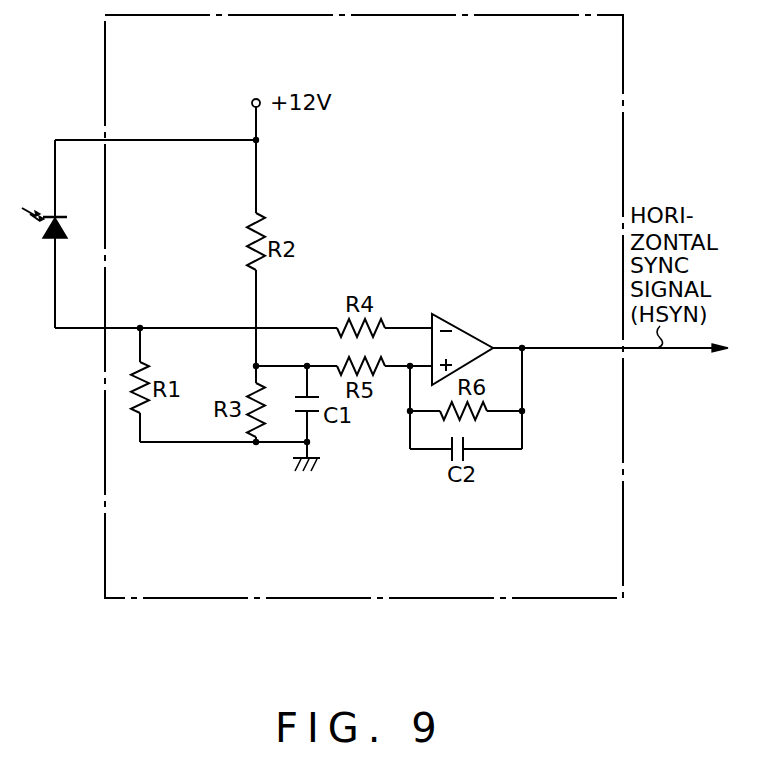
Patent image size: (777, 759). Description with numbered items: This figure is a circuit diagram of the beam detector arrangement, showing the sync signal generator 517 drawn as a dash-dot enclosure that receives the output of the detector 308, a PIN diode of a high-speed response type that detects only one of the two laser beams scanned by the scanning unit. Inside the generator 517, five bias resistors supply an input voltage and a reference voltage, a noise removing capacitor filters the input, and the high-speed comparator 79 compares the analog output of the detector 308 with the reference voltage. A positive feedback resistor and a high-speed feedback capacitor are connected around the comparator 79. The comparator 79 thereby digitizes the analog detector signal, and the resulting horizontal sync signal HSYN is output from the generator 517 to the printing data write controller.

The sync signal generator 517 is at (625, 58).
The detector 308 is at (68, 230).
The high-speed comparator 79 is at (452, 324).